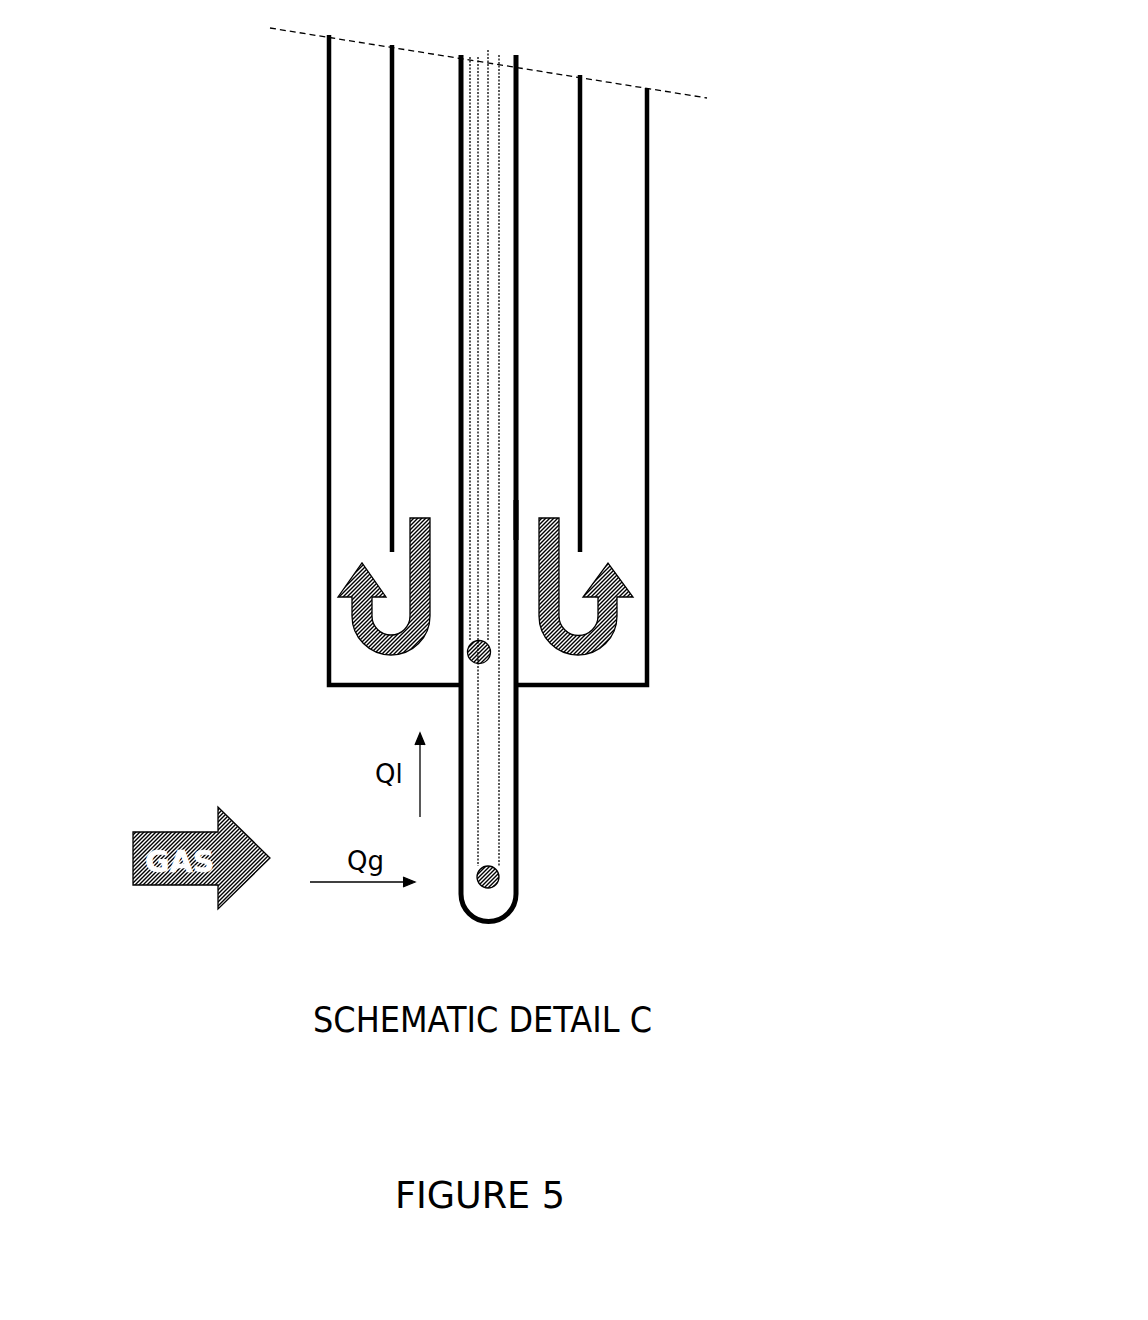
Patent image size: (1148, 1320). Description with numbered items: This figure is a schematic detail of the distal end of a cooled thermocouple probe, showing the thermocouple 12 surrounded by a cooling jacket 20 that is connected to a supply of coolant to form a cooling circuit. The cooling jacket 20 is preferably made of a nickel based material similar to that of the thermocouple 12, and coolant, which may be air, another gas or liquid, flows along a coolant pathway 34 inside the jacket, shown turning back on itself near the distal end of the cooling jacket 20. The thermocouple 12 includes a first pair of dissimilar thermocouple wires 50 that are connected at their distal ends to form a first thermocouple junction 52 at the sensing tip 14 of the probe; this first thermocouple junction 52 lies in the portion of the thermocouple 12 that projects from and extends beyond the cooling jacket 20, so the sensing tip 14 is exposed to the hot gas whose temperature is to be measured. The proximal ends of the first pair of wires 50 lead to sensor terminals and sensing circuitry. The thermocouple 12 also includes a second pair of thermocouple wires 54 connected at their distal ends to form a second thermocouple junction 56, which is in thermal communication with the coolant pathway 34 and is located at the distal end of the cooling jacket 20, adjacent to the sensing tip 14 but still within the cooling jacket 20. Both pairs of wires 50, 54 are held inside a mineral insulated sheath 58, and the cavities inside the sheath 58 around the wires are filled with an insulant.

The thermocouple 12 is at (522, 762).
The sensing tip 14 is at (510, 912).
The cooling jacket 20 is at (647, 230).
The coolant pathway 34 is at (362, 585).
The first pair of dissimilar thermocouple wires 50 is at (477, 369).
The first thermocouple junction 52 is at (500, 877).
The second pair of thermocouple wires 54 is at (473, 343).
The second thermocouple junction 56 is at (465, 663).
The mineral insulated sheath 58 is at (515, 517).